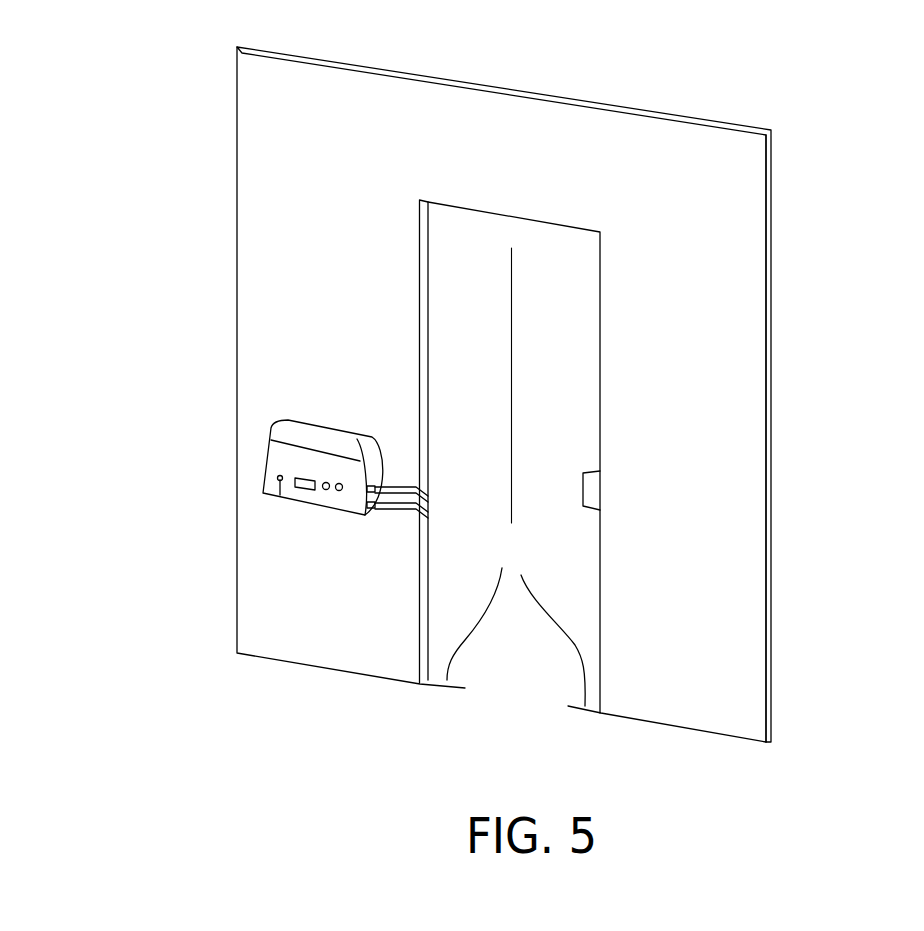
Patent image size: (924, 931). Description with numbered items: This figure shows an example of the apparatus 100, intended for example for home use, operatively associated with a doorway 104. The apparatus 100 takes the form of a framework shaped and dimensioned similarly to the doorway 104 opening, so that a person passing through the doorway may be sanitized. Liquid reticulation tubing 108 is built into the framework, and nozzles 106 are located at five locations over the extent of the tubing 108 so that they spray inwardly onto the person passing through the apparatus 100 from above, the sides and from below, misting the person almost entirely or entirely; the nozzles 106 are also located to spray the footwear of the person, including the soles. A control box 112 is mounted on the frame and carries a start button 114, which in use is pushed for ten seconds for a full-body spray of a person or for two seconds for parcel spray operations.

The apparatus 100 is at (205, 153).
The doorway 104 is at (600, 399).
The nozzles 106 is at (583, 492).
The liquid reticulation tubing 108 is at (422, 250).
The control box 112 is at (284, 427).
The start button 114 is at (255, 469).